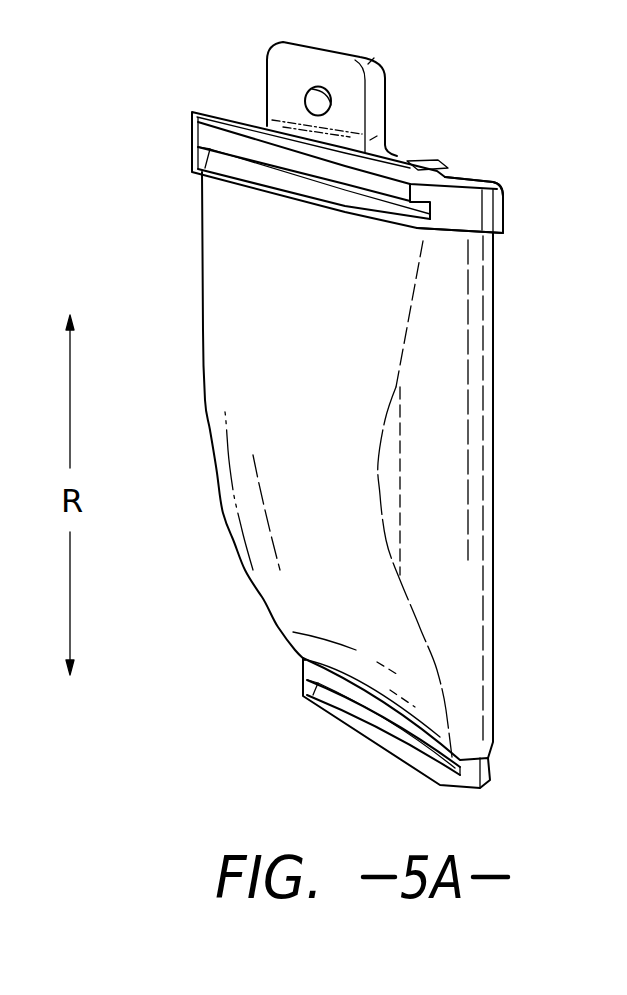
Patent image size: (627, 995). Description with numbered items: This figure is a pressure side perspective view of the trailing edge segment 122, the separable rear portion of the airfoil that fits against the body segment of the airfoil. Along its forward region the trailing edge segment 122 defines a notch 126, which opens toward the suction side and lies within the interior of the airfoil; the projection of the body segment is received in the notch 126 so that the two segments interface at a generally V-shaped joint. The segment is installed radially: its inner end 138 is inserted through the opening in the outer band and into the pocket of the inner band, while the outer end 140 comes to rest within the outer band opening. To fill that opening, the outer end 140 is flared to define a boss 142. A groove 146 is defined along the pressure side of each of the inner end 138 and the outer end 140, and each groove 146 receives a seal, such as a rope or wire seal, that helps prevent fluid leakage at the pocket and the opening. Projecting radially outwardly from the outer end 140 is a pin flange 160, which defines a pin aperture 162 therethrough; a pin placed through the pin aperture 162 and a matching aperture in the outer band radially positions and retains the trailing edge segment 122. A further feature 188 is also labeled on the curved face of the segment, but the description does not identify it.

The trailing edge segment 122 is at (312, 400).
The notch 126 is at (459, 162).
The inner end 138 is at (510, 773).
The outer end 140 is at (172, 132).
The boss 142 is at (470, 206).
The groove 146 is at (235, 169).
The pin flange 160 is at (292, 67).
The pin aperture 162 is at (309, 103).
The curved portion 188 is at (255, 525).